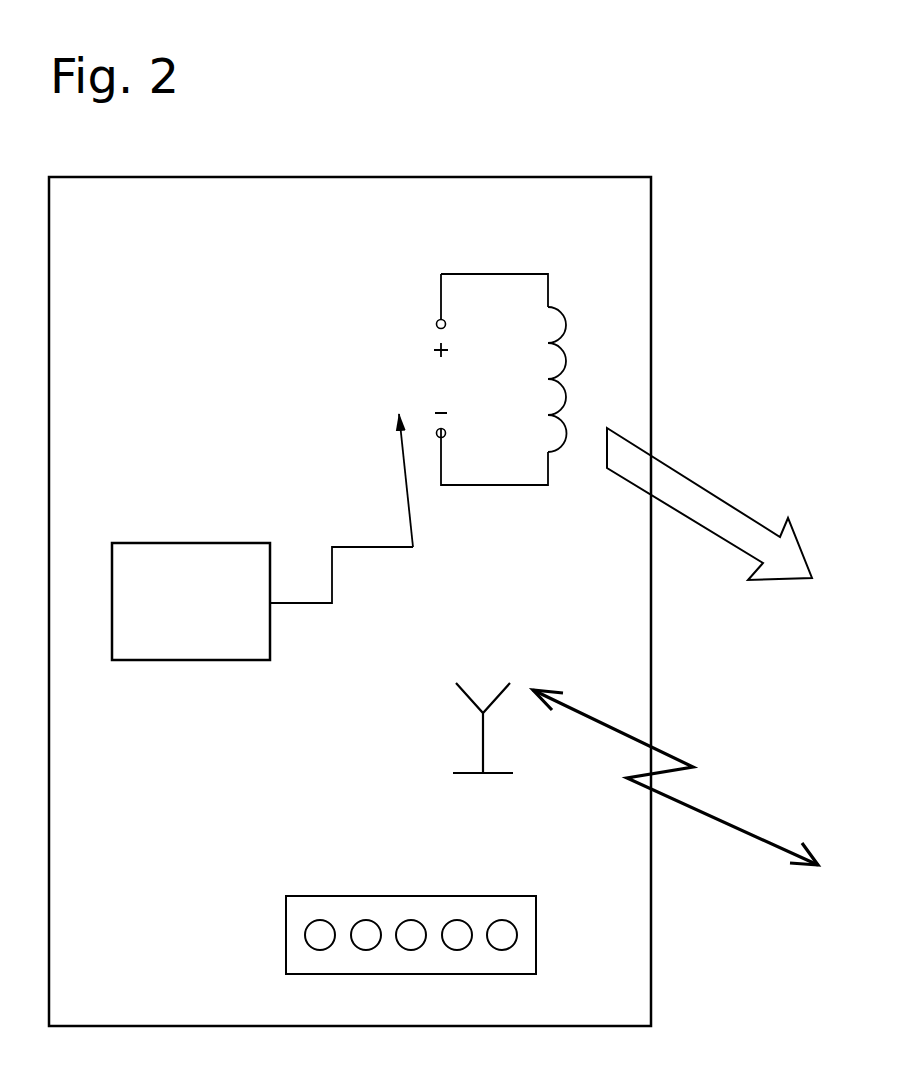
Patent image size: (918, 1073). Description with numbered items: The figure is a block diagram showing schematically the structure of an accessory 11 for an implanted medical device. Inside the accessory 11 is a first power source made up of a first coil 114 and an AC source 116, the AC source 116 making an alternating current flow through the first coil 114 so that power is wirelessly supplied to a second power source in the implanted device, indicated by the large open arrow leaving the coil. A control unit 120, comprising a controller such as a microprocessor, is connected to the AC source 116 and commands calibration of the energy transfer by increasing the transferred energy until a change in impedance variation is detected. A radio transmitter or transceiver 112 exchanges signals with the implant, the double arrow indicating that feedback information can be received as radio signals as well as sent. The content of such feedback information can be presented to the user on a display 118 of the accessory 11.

The accessory 11 is at (670, 141).
The first coil 114 is at (569, 301).
The AC source 116 is at (384, 346).
The control unit 120 is at (196, 537).
The radio transmitter or transceiver 112 is at (449, 723).
The display 118 is at (274, 911).